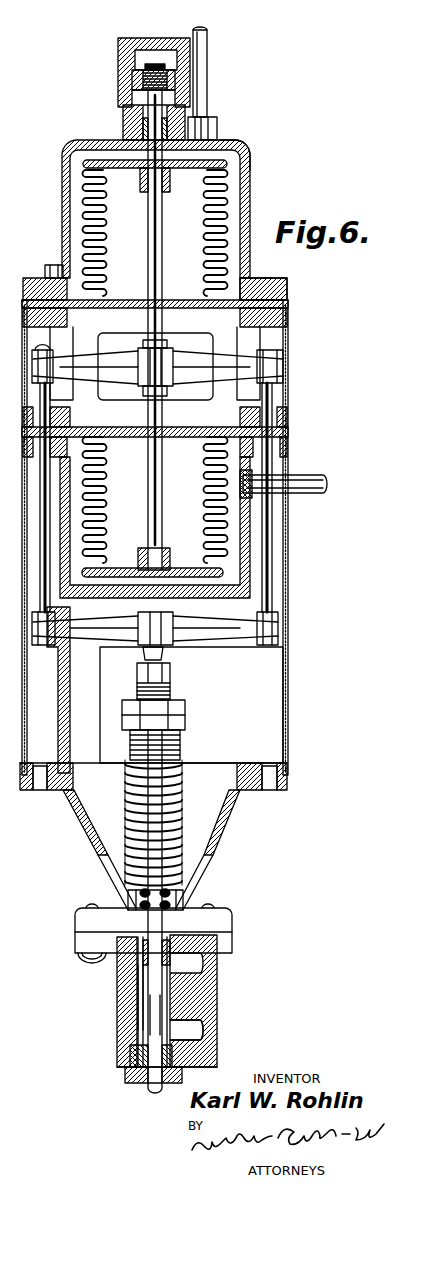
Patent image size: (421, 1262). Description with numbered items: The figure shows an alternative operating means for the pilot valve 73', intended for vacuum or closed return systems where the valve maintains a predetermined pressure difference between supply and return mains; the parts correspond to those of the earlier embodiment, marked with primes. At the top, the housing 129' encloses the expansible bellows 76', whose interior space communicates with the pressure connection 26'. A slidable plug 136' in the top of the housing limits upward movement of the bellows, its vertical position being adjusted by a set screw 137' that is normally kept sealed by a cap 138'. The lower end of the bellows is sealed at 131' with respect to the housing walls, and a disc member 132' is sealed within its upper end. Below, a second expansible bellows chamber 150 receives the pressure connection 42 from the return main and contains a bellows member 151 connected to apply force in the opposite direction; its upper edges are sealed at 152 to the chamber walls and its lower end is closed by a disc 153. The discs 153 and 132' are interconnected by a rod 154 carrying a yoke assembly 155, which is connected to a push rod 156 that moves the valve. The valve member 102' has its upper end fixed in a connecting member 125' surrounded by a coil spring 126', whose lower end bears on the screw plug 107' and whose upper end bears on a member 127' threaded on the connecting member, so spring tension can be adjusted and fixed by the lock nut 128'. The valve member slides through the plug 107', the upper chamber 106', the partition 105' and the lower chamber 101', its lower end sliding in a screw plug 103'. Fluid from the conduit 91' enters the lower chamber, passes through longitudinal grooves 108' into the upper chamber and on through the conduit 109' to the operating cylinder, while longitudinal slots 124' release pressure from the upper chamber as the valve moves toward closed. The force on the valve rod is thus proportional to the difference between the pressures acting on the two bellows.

The cap 138' is at (139, 62).
The set screw 137' is at (124, 77).
The slidable plug 136' is at (128, 120).
The pressure connection 26' is at (220, 83).
The disc member 132' is at (177, 137).
The expansible bellows 76' is at (253, 155).
The housing 129' is at (181, 220).
The seal 131' is at (266, 278).
The rod 154 is at (157, 284).
The yoke assembly 155 is at (283, 370).
The seal 152 is at (220, 429).
The pressure connection 42 is at (300, 482).
The bellows member 151 is at (207, 508).
The disc 153 is at (113, 570).
The expansible bellows chamber 150 is at (243, 549).
The push rod 156 is at (163, 660).
The lock nut 128' is at (189, 690).
The spring adjusting member 127' is at (182, 730).
The coil spring 126' is at (134, 823).
The connecting member 125' is at (116, 892).
The longitudinal slots 124' is at (204, 921).
The screw plug 107' is at (181, 928).
The upper chamber 106' is at (89, 967).
The pilot valve 73' is at (134, 1002).
The longitudinal grooves 108' is at (205, 1013).
The partition 105' is at (104, 998).
The lower chamber 101' is at (113, 1002).
The conduit 109' is at (227, 1001).
The fluid conduit 91' is at (216, 1031).
The screw plug 103' is at (118, 1066).
The slidable valve member 102' is at (116, 939).